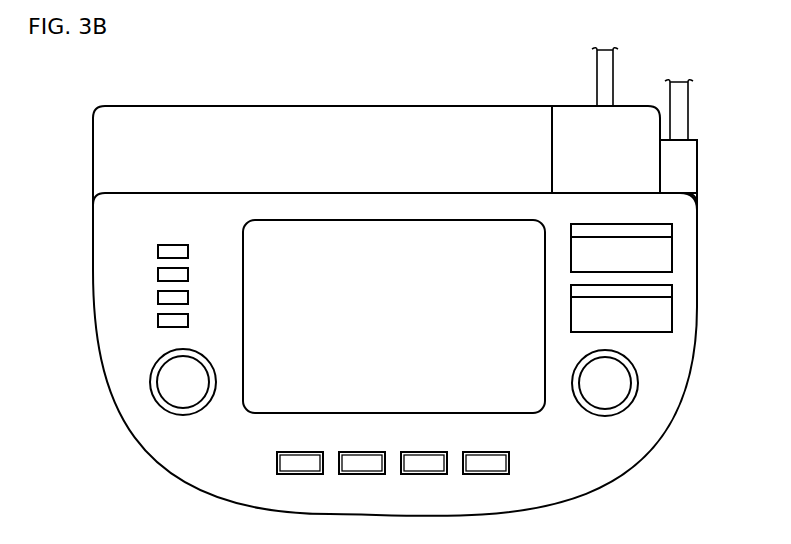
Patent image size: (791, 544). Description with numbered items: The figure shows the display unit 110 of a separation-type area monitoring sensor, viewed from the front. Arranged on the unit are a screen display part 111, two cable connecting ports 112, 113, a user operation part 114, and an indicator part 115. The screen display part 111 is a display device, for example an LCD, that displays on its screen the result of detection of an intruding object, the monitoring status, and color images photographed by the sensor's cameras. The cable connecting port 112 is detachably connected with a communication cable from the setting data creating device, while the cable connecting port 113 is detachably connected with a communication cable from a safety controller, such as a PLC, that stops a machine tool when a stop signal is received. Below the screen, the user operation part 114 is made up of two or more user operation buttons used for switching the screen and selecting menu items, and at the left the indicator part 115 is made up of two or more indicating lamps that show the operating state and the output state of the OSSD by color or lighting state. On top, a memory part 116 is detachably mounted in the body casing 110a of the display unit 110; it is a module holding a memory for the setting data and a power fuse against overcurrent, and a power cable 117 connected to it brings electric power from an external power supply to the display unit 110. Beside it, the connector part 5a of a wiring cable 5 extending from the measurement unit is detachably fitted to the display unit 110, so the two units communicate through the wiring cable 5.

The display unit 110 is at (530, 70).
The body casing 110a is at (694, 189).
The screen display part 111 is at (470, 220).
The cable connecting port 112 is at (672, 250).
The cable connecting port 113 is at (672, 310).
The user operation part 114 is at (513, 457).
The indicator part 115 is at (182, 240).
The memory part 116 is at (627, 112).
The power cable 117 is at (613, 57).
The wiring cable 5 is at (688, 104).
The connector part 5a is at (693, 165).